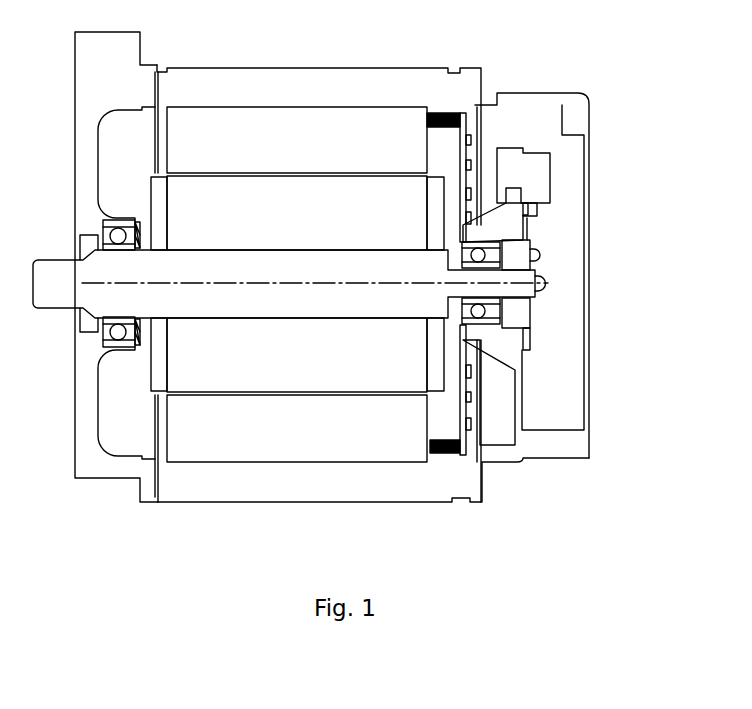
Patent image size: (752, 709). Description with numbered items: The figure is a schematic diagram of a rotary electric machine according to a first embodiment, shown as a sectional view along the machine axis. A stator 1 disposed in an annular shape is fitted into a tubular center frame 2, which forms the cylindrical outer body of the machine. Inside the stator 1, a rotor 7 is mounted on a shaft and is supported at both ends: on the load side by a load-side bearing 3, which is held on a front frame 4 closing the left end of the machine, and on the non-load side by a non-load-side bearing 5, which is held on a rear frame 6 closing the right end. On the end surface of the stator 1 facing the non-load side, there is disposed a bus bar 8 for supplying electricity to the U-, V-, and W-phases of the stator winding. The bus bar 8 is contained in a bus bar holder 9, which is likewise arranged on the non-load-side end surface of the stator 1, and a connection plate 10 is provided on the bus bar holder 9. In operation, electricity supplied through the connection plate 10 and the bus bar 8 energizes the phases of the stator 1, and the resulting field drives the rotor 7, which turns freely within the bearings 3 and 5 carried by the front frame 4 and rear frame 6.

The stator 1 is at (248, 133).
The center frame 2 is at (313, 85).
The load-side bearing 3 is at (106, 221).
The front frame 4 is at (92, 110).
The non-load-side bearing 5 is at (527, 233).
The rear frame 6 is at (570, 110).
The rotor 7 is at (311, 357).
The bus bar 8 is at (452, 112).
The bus bar holder 9 is at (430, 114).
The connection plate 10 is at (470, 118).